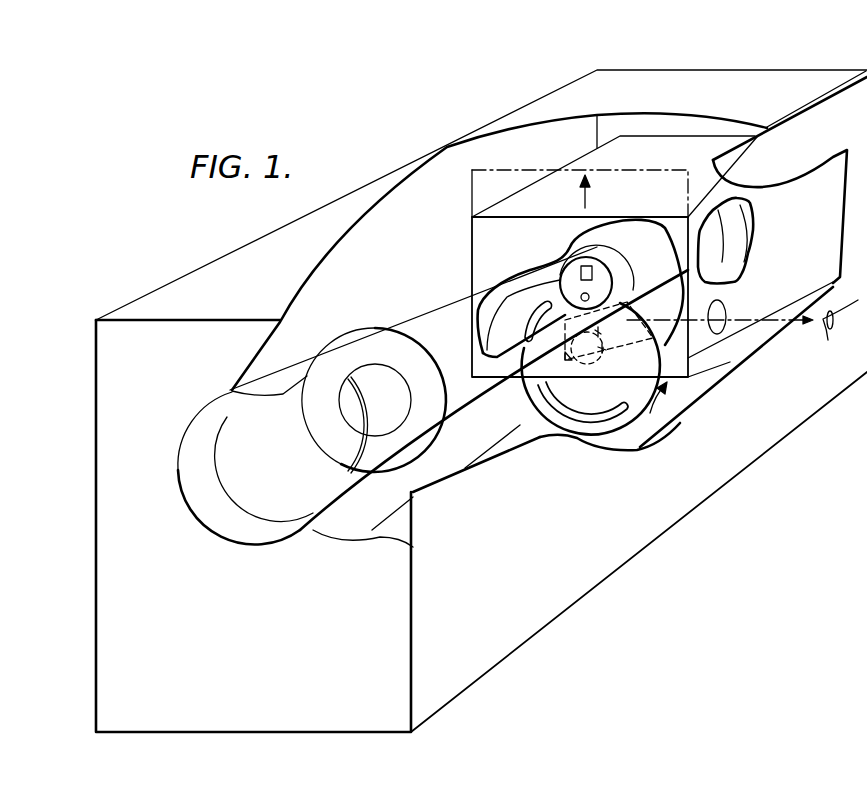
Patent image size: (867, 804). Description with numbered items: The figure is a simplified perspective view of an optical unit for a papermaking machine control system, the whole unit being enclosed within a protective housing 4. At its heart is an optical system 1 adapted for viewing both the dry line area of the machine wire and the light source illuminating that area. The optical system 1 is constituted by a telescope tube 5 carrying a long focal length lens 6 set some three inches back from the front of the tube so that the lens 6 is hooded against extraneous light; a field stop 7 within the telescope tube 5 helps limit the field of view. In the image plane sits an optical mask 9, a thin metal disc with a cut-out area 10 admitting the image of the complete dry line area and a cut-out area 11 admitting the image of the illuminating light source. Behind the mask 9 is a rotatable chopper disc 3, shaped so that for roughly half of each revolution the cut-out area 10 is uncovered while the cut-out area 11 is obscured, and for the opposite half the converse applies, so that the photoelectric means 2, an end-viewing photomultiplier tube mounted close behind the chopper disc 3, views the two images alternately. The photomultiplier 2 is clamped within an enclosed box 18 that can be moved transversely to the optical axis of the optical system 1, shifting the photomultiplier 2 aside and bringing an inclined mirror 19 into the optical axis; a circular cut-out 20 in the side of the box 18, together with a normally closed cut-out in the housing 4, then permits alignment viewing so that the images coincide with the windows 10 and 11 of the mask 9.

The optical system 1 is at (437, 313).
The photoelectric means 2 is at (703, 266).
The chopper disc 3 is at (650, 447).
The protective housing 4 is at (608, 578).
The telescope tube 5 is at (457, 405).
The lens 6 is at (325, 392).
The field stop 7 is at (388, 352).
The optical mask 9 is at (604, 277).
The cut-out area 10 is at (592, 266).
The cut-out area 11 is at (590, 295).
The enclosed box 18 is at (472, 240).
The inclined mirror 19 is at (660, 341).
The circular cut-out 20 is at (727, 305).